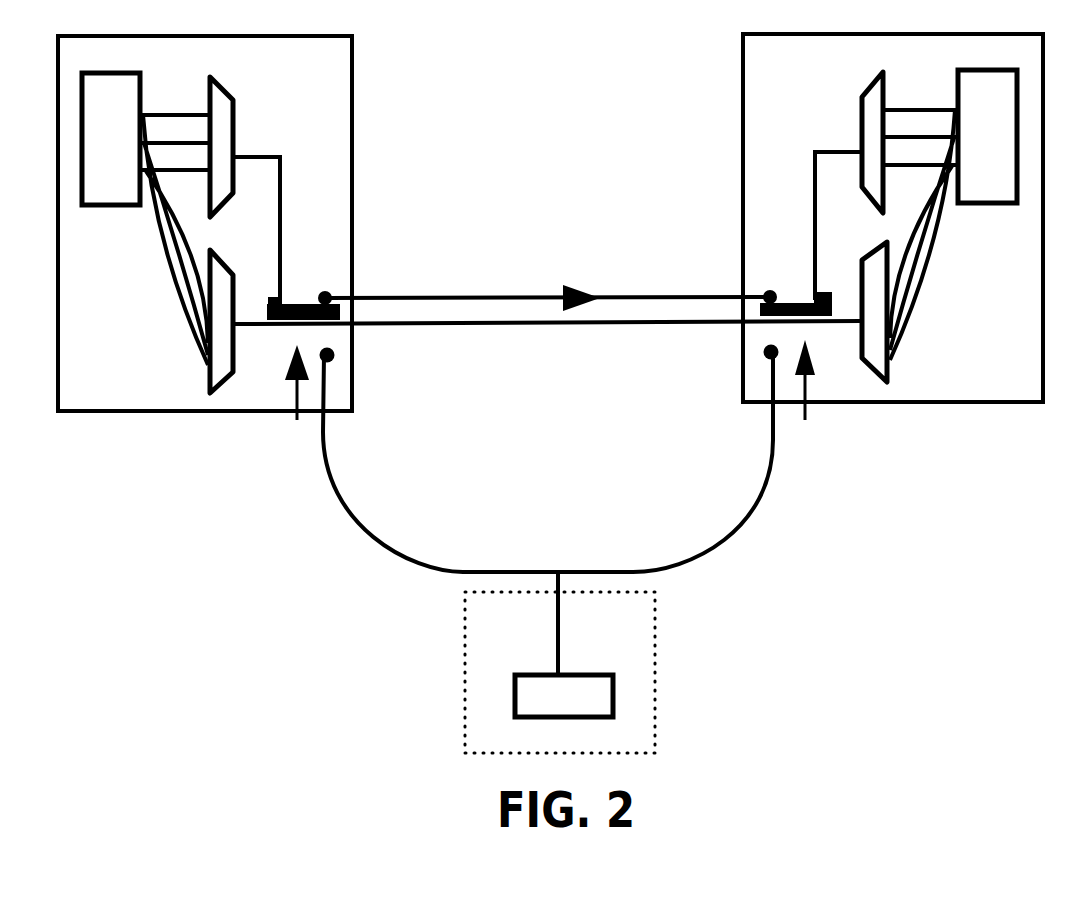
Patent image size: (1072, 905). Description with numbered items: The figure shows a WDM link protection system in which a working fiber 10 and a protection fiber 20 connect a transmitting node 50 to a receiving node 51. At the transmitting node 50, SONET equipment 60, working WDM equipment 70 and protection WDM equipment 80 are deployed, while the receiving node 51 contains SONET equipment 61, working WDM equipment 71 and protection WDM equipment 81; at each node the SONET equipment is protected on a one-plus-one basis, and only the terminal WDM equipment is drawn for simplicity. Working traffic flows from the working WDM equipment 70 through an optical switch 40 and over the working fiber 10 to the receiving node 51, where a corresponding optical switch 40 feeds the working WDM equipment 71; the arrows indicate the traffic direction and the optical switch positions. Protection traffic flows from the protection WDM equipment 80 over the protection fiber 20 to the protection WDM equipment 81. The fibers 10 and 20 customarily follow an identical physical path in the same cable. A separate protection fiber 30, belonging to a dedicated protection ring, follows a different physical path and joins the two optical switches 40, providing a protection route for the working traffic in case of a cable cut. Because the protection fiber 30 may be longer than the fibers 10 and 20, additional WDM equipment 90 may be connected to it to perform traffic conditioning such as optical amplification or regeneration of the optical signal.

The working fiber 10 is at (440, 295).
The protection fiber 20 is at (507, 327).
The protection fiber 30 is at (365, 522).
The optical switch 40 is at (549, 284).
The transmitting node 50 is at (205, 223).
The receiving node 51 is at (893, 218).
The SONET equipment 60 is at (146, 219).
The SONET equipment 61 is at (950, 215).
The working WDM equipment 70 is at (245, 179).
The working WDM equipment 71 is at (849, 168).
The protection WDM equipment 80 is at (235, 312).
The protection WDM equipment 81 is at (869, 295).
The additional WDM equipment 90 is at (560, 662).